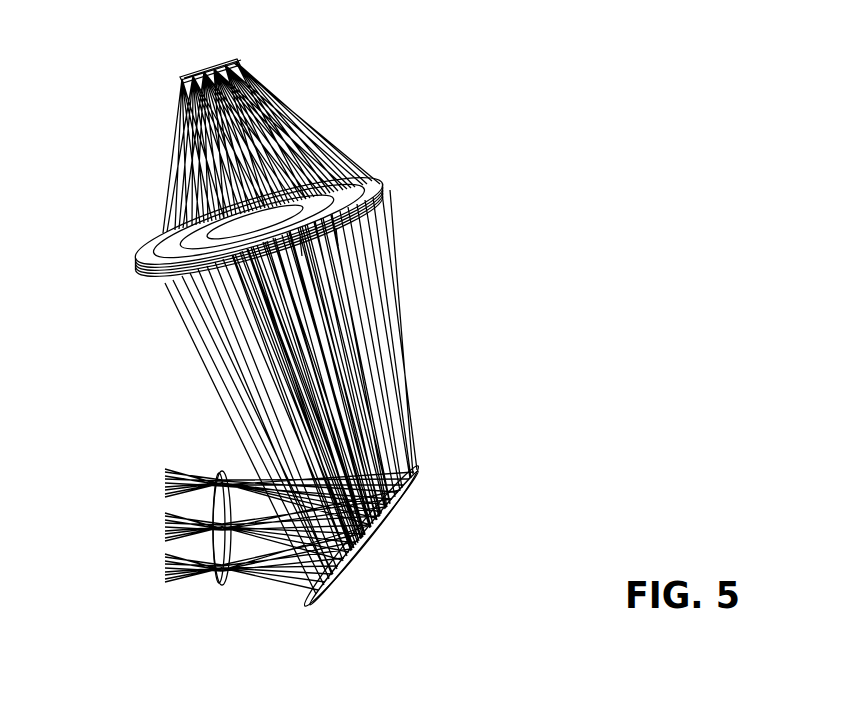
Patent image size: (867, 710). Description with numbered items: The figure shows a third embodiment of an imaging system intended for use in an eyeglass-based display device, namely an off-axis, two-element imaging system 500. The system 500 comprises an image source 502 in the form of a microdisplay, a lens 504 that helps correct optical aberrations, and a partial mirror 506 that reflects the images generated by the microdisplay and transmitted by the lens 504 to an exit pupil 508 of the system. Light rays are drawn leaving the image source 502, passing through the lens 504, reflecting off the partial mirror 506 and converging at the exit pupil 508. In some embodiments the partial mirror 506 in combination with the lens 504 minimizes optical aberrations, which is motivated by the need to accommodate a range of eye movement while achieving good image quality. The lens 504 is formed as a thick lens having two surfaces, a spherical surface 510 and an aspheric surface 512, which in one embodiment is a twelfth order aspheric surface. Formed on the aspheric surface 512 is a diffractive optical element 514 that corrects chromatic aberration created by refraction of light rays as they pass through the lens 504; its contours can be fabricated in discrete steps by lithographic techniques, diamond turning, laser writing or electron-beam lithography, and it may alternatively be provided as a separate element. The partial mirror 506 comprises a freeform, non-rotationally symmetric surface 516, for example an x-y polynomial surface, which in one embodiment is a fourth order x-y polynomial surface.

The imaging system 500 is at (540, 148).
The image source 502 is at (190, 77).
The lens 504 is at (100, 250).
The partial mirror 506 is at (432, 516).
The exit pupil 508 is at (227, 483).
The spherical surface 510 is at (374, 190).
The aspheric surface 512 is at (345, 226).
The diffractive optical element 514 is at (357, 235).
The non-rotationally symmetric surface 516 is at (372, 530).